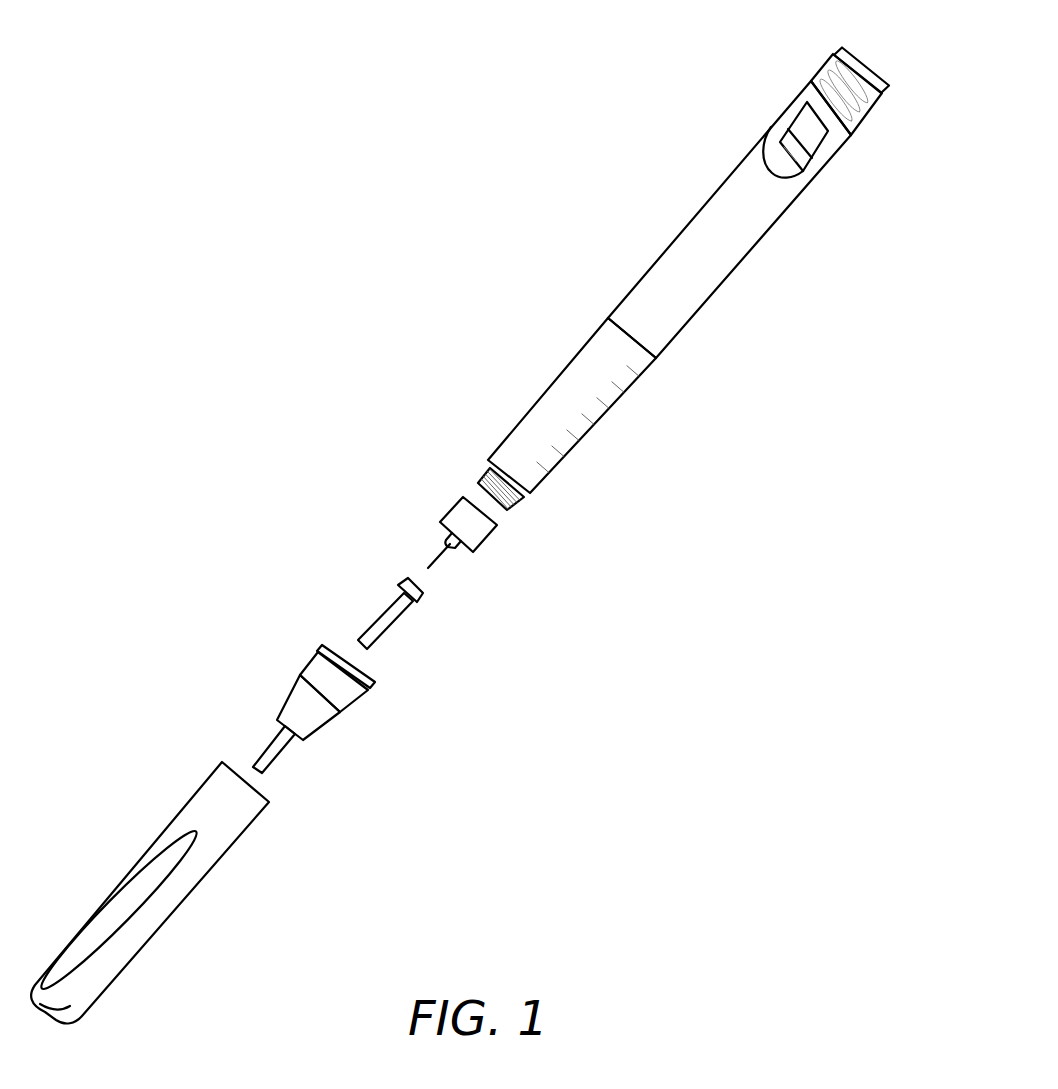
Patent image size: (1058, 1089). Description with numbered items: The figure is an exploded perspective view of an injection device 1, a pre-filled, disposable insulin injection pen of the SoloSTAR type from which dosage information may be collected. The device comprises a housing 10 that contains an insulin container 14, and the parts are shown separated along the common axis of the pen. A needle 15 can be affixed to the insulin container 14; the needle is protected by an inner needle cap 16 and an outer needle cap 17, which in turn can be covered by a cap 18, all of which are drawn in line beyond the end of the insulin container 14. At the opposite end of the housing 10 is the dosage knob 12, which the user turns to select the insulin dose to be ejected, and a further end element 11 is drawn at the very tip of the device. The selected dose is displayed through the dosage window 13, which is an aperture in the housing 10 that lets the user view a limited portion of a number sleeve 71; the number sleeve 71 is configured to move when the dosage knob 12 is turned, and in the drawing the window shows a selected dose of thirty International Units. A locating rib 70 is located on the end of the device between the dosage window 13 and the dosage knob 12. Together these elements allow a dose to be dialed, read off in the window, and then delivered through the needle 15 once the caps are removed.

The injection device 1 is at (531, 272).
The housing 10 is at (693, 223).
The dose button 11 is at (872, 56).
The dosage knob 12 is at (807, 69).
The dosage window 13 is at (771, 130).
The insulin container 14 is at (557, 395).
The needle 15 is at (460, 513).
The inner needle cap 16 is at (385, 618).
The outer needle cap 17 is at (318, 668).
The cap 18 is at (198, 795).
The locating rib 70 is at (832, 111).
The number sleeve 71 is at (790, 167).